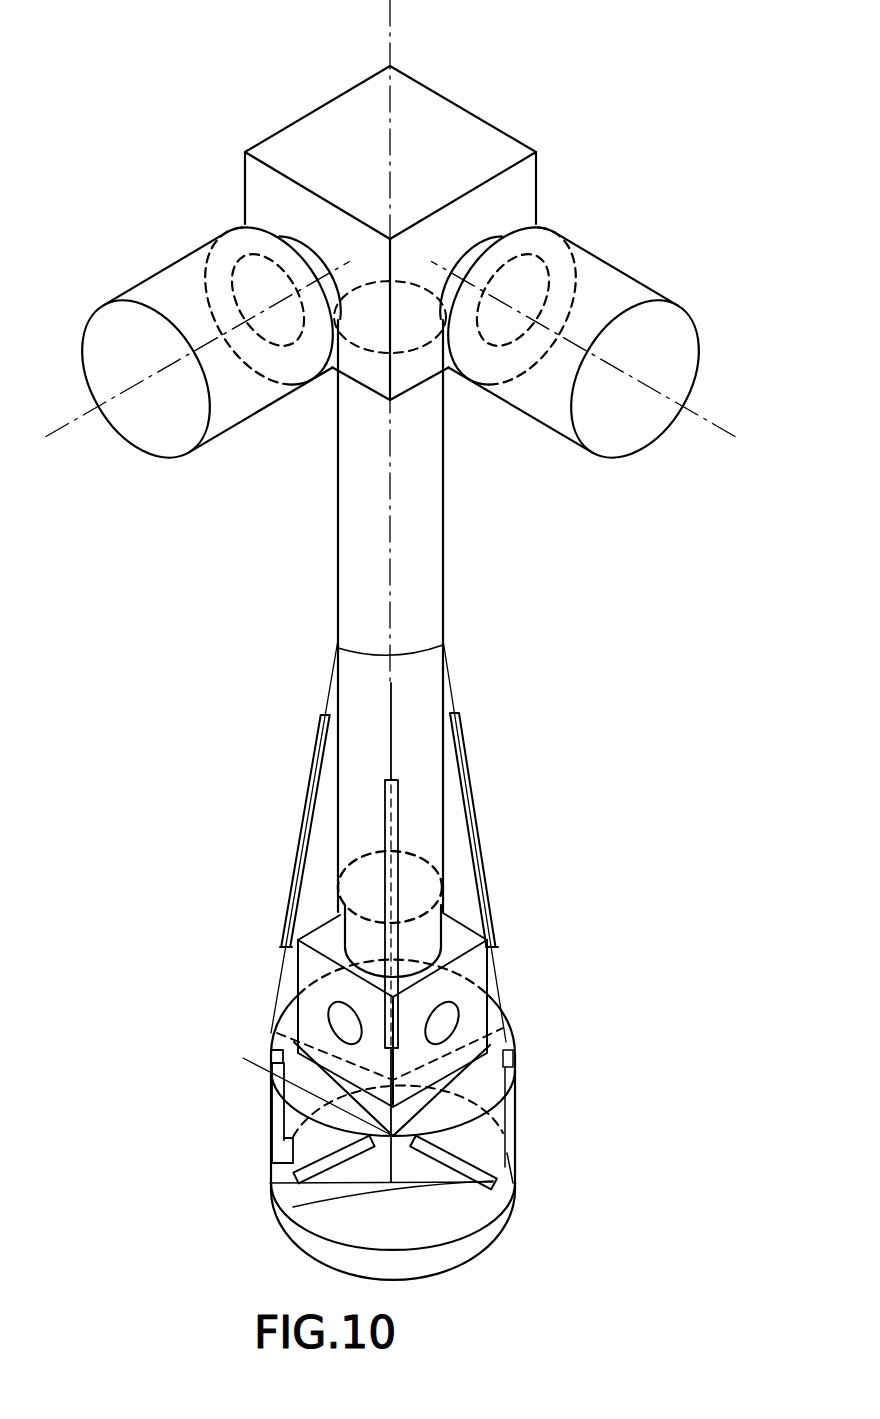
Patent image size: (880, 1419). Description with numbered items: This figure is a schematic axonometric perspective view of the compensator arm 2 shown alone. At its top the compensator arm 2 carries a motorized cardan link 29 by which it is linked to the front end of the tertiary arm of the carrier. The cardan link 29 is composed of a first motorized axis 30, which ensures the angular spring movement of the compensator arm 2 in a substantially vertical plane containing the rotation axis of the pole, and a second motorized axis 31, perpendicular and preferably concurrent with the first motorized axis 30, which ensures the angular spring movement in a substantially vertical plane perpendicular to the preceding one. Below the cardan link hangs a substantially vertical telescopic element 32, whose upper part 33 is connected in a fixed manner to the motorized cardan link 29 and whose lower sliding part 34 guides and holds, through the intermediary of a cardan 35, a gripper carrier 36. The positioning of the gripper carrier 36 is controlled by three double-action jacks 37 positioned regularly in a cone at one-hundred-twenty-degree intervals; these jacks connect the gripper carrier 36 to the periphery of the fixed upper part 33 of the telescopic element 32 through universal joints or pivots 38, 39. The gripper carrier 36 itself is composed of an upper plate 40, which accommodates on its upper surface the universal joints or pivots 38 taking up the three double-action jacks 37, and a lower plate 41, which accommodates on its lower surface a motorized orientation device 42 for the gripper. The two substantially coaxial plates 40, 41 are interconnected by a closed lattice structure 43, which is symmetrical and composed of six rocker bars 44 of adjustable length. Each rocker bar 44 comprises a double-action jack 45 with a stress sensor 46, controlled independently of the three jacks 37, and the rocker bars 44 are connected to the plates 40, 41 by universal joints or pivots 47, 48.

The compensator arm 2 is at (510, 662).
The motorized cardan link 29 is at (502, 195).
The first motorized axis 30 is at (692, 405).
The second motorized axis 31 is at (185, 353).
The telescopic element 32 is at (476, 648).
The upper part 33 is at (428, 842).
The lower sliding part 34 is at (423, 938).
The cardan 35 is at (470, 975).
The gripper carrier 36 is at (464, 1120).
The double-action jacks 37 is at (385, 797).
The universal joints or pivots 38 is at (507, 1027).
The universal joints or pivots 39 is at (391, 683).
The upper plate 40 is at (475, 1077).
The lower plate 41 is at (457, 1198).
The motorized orientation device 42 is at (433, 1235).
The closed lattice structure 43 is at (463, 1142).
The rocker bars 44 is at (220, 1113).
The double-action jack 45 is at (273, 1110).
The stress sensor 46 is at (280, 1158).
The universal joints or pivots 47 is at (263, 1032).
The universal joints or pivots 48 is at (293, 1207).